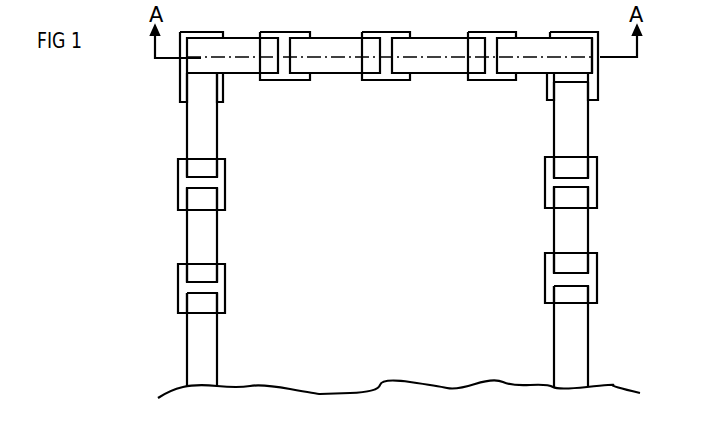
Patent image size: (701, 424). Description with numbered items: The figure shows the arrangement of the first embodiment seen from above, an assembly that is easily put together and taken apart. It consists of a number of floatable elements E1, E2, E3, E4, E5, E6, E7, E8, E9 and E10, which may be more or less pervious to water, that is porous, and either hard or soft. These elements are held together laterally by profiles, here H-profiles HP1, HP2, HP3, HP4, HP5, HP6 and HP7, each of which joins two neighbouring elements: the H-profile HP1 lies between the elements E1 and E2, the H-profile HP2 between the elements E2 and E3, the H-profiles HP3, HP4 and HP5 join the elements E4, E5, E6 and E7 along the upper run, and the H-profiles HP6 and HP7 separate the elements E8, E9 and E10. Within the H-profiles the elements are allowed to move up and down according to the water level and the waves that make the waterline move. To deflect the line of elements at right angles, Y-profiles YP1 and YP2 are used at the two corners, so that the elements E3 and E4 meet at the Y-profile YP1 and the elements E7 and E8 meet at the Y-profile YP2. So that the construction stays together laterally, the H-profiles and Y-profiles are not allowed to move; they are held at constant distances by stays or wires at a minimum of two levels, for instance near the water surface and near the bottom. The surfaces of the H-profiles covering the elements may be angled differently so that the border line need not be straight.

The floatable element E1 is at (217, 353).
The floatable element E2 is at (217, 247).
The floatable element E3 is at (218, 131).
The floatable element E4 is at (238, 74).
The floatable element E5 is at (335, 74).
The floatable element E6 is at (440, 74).
The floatable element E7 is at (533, 74).
The floatable element E8 is at (553, 130).
The floatable element E9 is at (553, 228).
The floatable element E10 is at (553, 323).
The H-profile HP1 is at (178, 293).
The H-profile HP2 is at (178, 180).
The H-profile HP3 is at (285, 42).
The H-profile HP4 is at (386, 42).
The H-profile HP5 is at (492, 42).
The H-profile HP6 is at (597, 180).
The H-profile HP7 is at (597, 287).
The Y-profile YP1 is at (181, 76).
The Y-profile YP2 is at (596, 88).